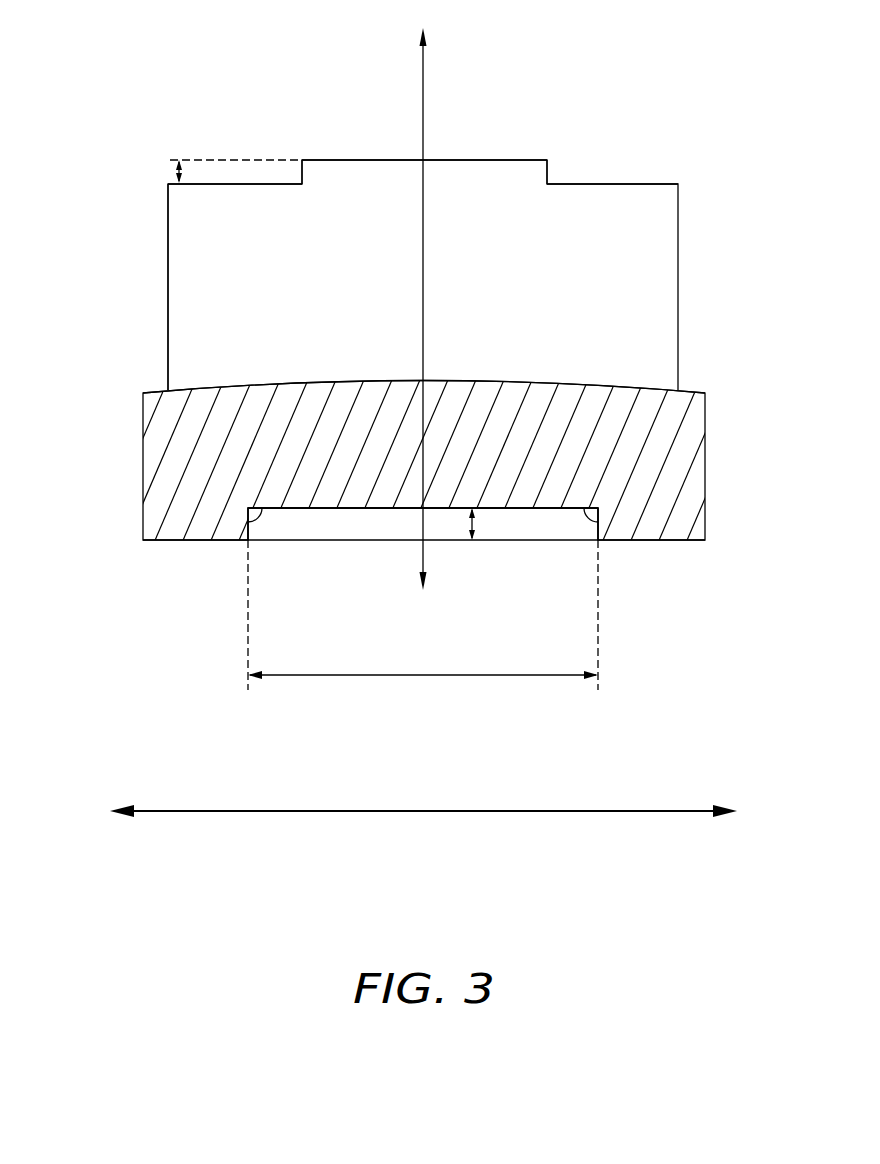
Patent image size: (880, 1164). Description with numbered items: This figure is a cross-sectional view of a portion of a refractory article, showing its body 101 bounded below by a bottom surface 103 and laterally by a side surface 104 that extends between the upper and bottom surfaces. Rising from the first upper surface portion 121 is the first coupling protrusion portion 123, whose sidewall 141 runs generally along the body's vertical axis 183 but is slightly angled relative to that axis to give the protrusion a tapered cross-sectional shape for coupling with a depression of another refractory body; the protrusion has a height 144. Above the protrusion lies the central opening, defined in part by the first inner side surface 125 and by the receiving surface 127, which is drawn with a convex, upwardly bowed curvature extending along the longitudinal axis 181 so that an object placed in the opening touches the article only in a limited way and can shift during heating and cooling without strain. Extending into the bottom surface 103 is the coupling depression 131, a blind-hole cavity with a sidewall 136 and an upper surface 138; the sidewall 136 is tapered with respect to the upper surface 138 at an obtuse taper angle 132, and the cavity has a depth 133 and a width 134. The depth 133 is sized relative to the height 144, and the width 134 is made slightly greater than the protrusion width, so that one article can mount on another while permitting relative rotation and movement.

The body 101 is at (678, 182).
The bottom surface 103 is at (160, 543).
The side surface 104 is at (142, 475).
The first upper surface portion 121 is at (610, 182).
The first coupling protrusion portion 123 is at (468, 158).
The first inner side surface 125 is at (180, 265).
The receiving surface 127 is at (226, 387).
The coupling depression 131 is at (324, 525).
The taper angle 132 is at (583, 517).
The depth 133 is at (474, 520).
The width 134 is at (445, 676).
The sidewall 136 is at (250, 563).
The upper surface 138 is at (343, 508).
The sidewall 141 is at (300, 178).
The height 144 is at (175, 167).
The longitudinal axis 181 is at (495, 812).
The vertical axis 183 is at (428, 60).